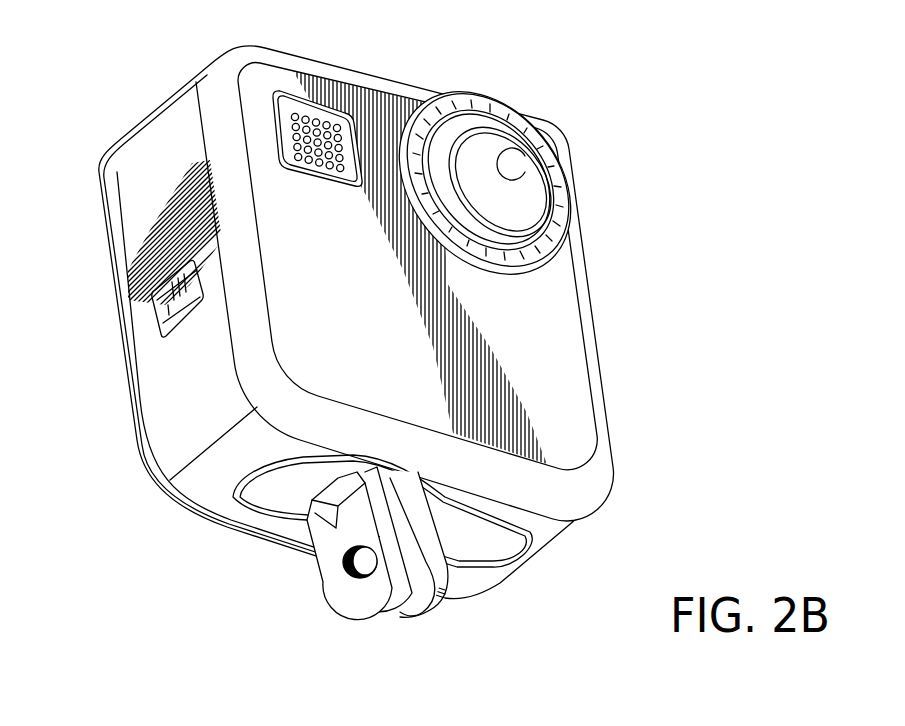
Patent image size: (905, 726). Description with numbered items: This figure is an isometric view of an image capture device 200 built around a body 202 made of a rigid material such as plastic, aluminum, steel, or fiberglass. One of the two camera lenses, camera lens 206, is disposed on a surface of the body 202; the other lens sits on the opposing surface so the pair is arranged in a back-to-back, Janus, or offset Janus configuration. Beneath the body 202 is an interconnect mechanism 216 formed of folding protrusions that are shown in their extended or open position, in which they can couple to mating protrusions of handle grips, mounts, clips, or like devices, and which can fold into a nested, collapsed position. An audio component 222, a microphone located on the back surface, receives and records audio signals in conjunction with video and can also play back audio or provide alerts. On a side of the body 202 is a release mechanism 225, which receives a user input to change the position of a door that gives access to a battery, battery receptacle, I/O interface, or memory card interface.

The image capture device 200 is at (615, 108).
The body 202 is at (594, 323).
The camera lens 206 is at (510, 168).
The interconnect mechanism 216 is at (335, 553).
The audio component 222 is at (295, 117).
The release mechanism 225 is at (165, 307).